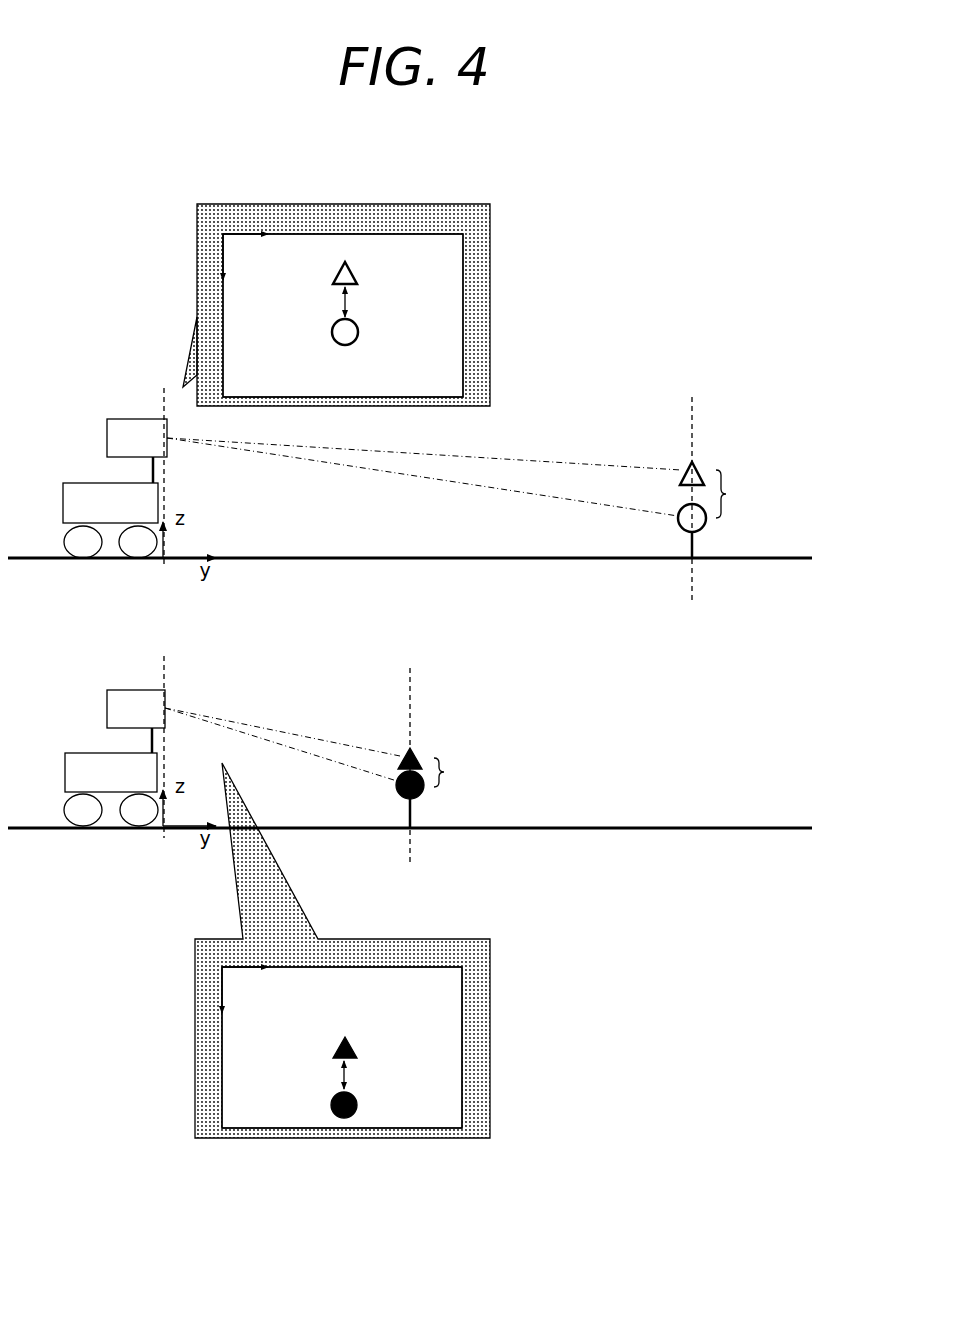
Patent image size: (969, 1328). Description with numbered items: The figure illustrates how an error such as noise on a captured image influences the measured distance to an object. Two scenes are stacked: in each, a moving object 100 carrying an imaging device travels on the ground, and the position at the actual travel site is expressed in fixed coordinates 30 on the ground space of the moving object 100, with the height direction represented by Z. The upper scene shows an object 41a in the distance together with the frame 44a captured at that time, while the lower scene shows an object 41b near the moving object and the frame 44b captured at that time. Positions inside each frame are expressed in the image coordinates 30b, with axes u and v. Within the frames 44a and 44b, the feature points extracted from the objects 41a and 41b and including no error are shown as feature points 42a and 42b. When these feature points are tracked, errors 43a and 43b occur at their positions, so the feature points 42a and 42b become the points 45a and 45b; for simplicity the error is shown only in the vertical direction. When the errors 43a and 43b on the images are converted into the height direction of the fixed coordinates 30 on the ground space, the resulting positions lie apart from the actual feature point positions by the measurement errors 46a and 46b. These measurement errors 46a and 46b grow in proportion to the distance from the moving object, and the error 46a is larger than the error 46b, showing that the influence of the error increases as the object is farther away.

The moving object 100 is at (80, 483).
The coordinates of the actual site 30 is at (187, 578).
The coordinates of the frame image 30b is at (236, 236).
The object in the distance 41a is at (698, 533).
The object near the frame 41b is at (416, 806).
The feature point 42a is at (318, 332).
The feature point 42b is at (317, 1105).
The error 43a is at (350, 302).
The error 43b is at (349, 1073).
The frame 44a is at (463, 283).
The frame 44b is at (463, 1031).
The point 45a is at (317, 275).
The point 45b is at (317, 1050).
The measurement error 46a is at (747, 494).
The measurement error 46b is at (465, 772).